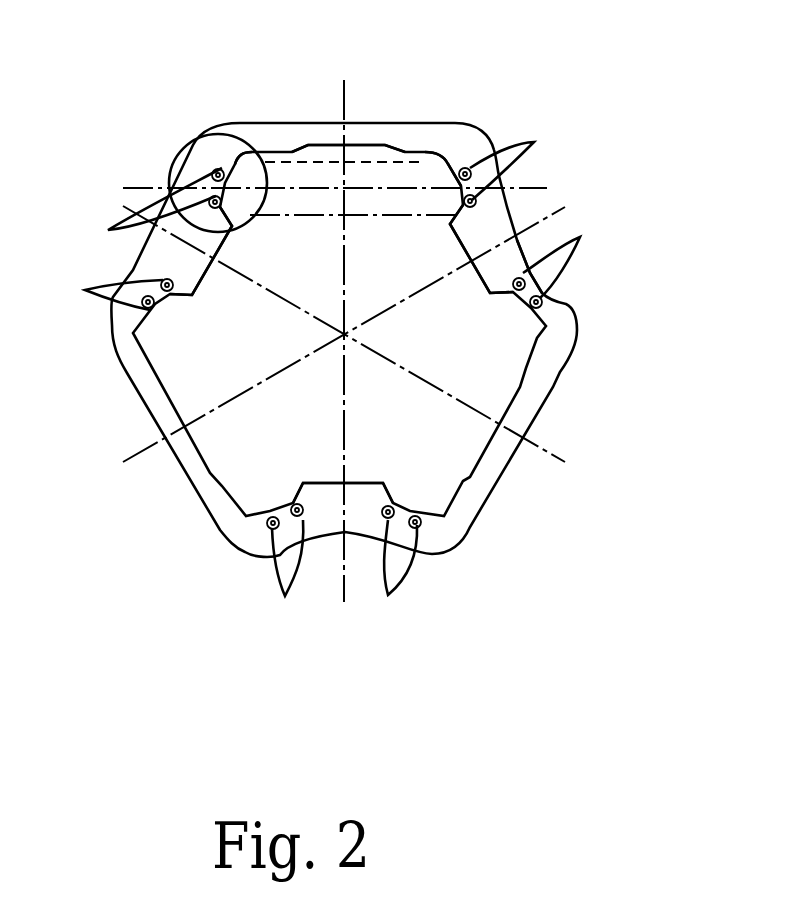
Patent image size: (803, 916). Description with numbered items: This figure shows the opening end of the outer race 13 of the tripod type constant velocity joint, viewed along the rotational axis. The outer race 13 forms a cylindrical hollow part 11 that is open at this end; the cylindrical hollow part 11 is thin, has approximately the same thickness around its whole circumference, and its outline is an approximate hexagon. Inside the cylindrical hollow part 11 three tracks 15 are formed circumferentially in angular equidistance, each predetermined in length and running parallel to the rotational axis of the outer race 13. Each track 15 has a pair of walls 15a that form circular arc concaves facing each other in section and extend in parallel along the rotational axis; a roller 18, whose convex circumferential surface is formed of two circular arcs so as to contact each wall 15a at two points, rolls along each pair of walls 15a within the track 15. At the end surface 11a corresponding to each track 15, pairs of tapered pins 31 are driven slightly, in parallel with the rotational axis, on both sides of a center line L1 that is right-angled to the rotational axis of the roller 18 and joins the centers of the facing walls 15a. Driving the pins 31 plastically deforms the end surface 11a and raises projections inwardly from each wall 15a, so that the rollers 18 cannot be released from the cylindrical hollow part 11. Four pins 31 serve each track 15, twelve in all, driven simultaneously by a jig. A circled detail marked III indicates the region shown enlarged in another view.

The cylindrical hollow part 11 is at (377, 340).
The end surface 11a is at (615, 286).
The outer race 13 is at (174, 505).
The track 15 is at (302, 289).
The wall 15a is at (284, 118).
The roller 18 is at (345, 92).
The pin 31 is at (330, 368).
The center line L1 is at (540, 162).
The section indicator III is at (218, 121).